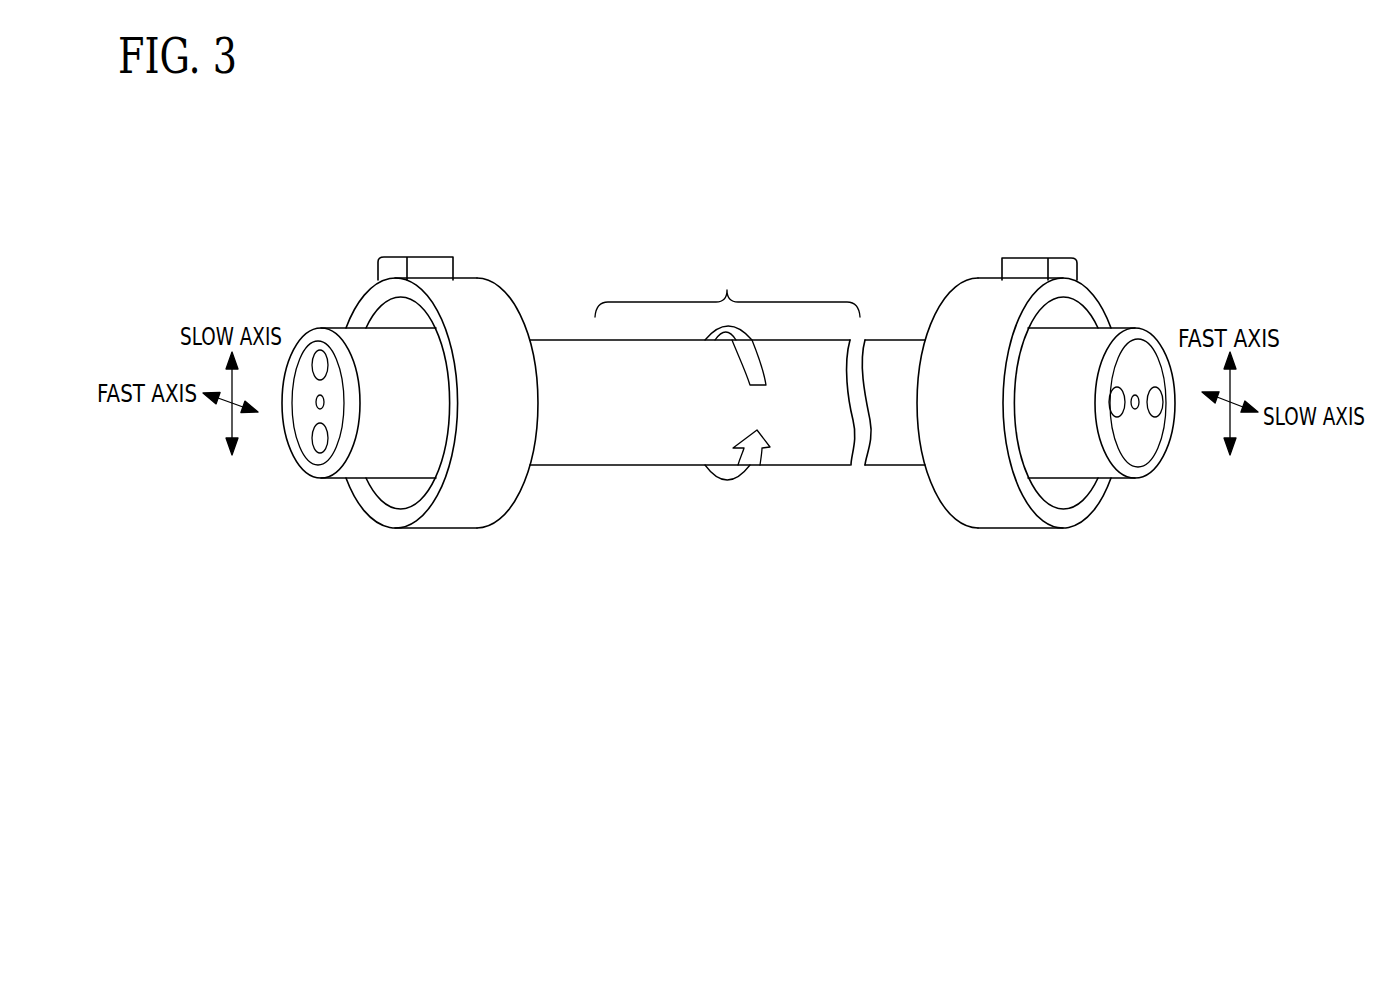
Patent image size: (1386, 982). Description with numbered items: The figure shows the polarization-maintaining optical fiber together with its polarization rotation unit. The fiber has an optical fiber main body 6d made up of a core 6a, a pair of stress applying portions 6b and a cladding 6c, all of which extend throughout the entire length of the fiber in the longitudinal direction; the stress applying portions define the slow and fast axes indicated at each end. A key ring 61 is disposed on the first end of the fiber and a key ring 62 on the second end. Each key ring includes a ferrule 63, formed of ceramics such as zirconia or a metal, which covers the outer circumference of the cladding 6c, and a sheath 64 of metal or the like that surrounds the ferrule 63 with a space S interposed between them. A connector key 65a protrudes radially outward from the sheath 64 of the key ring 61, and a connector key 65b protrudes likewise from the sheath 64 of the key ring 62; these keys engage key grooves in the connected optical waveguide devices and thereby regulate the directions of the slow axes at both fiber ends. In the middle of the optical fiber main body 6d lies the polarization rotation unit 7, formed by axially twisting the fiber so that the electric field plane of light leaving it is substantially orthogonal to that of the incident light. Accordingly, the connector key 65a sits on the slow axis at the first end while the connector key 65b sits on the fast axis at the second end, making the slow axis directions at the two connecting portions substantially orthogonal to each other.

The key ring 61 is at (478, 492).
The key ring 62 is at (985, 493).
The ferrule 63 is at (303, 462).
The sheath 64 is at (357, 305).
The connector key 65a is at (420, 257).
The connector key 65b is at (1032, 258).
The core 6a is at (318, 403).
The stress applying portions 6b is at (320, 365).
The cladding 6c is at (338, 412).
The optical fiber main body 6d is at (808, 425).
The polarization rotation unit 7 is at (727, 286).
The space S is at (377, 319).